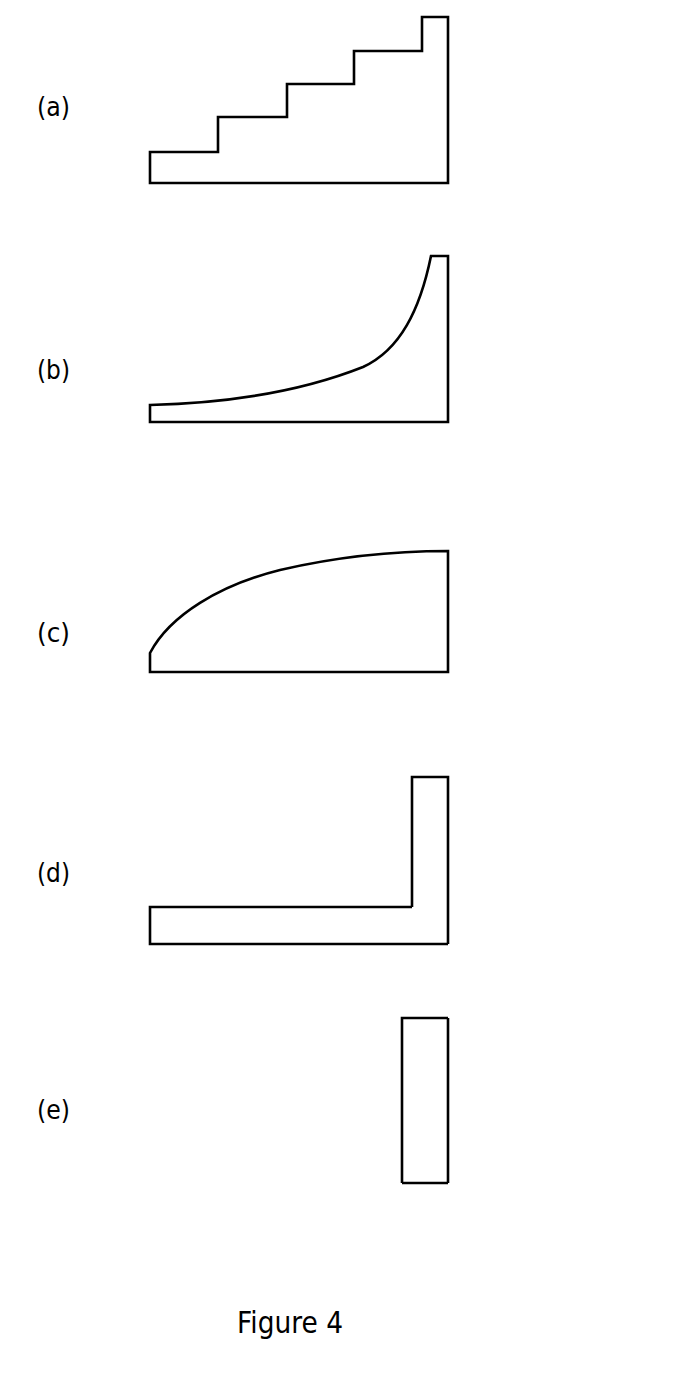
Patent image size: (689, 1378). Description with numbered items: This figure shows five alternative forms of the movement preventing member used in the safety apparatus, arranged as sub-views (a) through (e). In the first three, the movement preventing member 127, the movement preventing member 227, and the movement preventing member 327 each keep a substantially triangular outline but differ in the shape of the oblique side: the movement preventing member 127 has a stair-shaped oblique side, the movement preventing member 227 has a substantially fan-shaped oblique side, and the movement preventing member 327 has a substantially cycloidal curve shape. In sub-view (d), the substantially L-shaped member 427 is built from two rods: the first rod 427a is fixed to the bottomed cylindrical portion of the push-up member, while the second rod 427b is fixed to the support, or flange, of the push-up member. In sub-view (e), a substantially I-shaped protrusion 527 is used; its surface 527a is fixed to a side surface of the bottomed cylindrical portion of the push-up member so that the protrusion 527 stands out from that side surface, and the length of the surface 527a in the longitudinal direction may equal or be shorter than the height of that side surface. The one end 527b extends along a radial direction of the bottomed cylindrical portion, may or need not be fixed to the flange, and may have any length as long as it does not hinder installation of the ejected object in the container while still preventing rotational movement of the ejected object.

The movement preventing member 127 is at (365, 68).
The movement preventing member 227 is at (412, 343).
The movement preventing member 327 is at (348, 573).
The substantially L-shaped member 427 is at (365, 860).
The first rod 427a is at (440, 877).
The second rod 427b is at (200, 925).
The substantially I-shaped protrusion 527 is at (416, 1105).
The surface of the protrusion 527a is at (450, 1058).
The one end of the protrusion 527b is at (430, 1183).